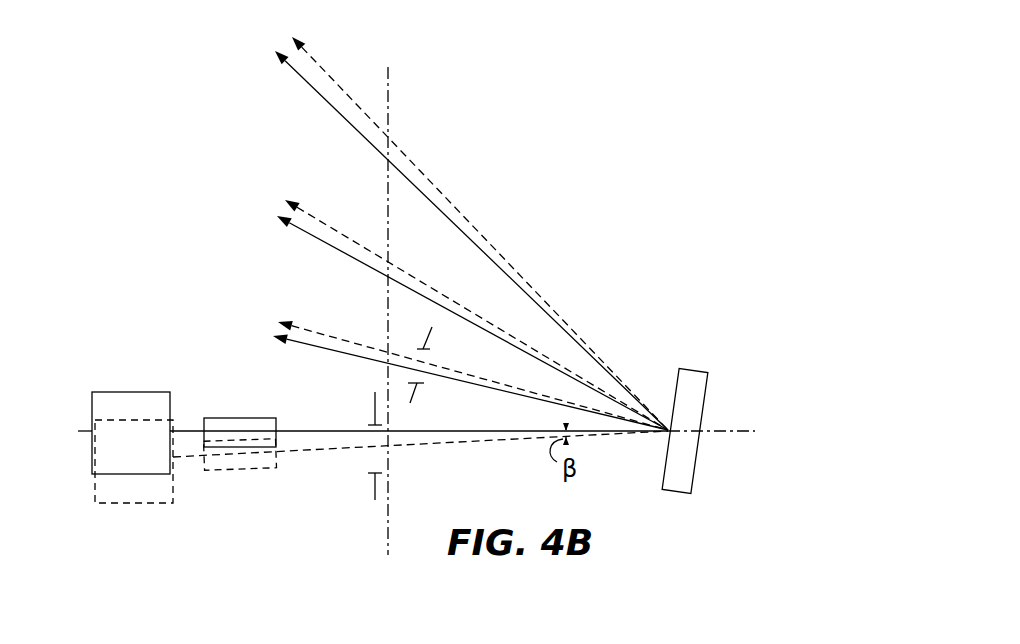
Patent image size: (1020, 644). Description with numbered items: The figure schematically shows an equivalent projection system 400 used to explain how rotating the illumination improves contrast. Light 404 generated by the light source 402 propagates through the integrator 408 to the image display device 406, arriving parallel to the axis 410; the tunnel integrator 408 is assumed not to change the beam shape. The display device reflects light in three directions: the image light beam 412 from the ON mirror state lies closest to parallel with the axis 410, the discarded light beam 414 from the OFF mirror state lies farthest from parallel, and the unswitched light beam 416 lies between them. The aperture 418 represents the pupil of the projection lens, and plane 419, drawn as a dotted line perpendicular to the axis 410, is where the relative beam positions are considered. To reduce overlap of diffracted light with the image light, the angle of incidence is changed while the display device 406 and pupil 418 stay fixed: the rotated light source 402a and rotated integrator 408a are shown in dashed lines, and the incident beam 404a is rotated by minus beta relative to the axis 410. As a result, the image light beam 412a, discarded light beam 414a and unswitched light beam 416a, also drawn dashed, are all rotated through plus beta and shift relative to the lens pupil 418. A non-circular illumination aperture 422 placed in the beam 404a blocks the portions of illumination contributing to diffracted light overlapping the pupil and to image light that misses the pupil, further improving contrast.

The equivalent projection system 400 is at (601, 160).
The light source 402 is at (137, 392).
The rotated light source 402a is at (133, 503).
The illumination light beam 404 is at (323, 430).
The rotated incident light beam 404a is at (461, 445).
The image display device 406 is at (695, 470).
The integrator 408 is at (260, 418).
The rotated integrator 408a is at (248, 470).
The axis 410 is at (712, 429).
The image light beam 412 is at (312, 348).
The rotated image light beam 412a is at (318, 328).
The discarded light beam 414 is at (308, 85).
The rotated discarded light beam 414a is at (320, 66).
The unswitched light beam 416 is at (307, 237).
The rotated unswitched light beam 416a is at (318, 218).
The aperture 418 is at (433, 337).
The plane 419 is at (389, 92).
The non-circular illumination aperture 422 is at (372, 488).